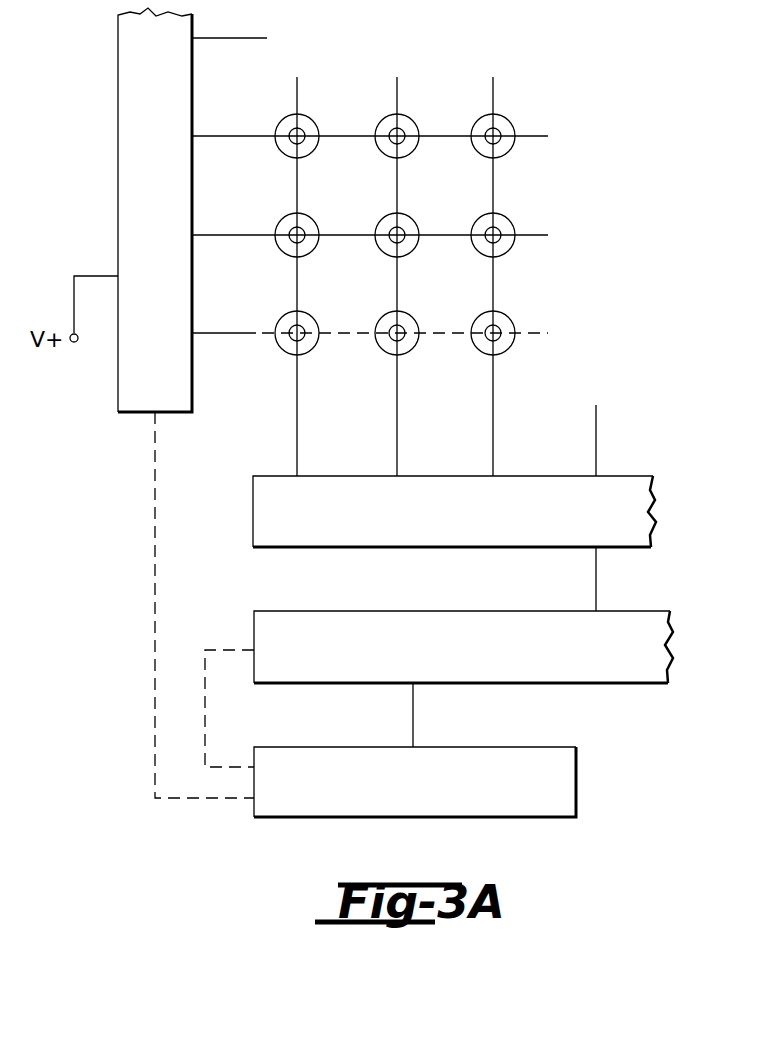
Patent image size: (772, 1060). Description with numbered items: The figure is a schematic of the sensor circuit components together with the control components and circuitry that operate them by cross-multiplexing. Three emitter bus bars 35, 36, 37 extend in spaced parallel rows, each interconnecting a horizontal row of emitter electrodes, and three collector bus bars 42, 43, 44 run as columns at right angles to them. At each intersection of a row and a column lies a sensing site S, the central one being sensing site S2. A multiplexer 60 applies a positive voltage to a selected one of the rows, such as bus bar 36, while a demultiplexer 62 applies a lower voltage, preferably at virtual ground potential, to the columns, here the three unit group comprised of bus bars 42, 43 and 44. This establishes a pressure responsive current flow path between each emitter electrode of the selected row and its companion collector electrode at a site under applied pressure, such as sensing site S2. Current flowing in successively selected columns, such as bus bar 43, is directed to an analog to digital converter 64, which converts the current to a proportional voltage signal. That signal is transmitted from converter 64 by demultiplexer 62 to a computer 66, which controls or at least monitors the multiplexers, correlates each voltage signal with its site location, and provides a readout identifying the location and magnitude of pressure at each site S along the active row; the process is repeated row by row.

The multiplexer 60 is at (132, 141).
The bus bar 35 is at (210, 134).
The bus bar 36 is at (208, 234).
The bus bar 37 is at (208, 332).
The collector bus bar 42 is at (493, 414).
The collector bus bar 43 is at (397, 414).
The collector bus bar 44 is at (297, 414).
The sensing site S is at (412, 213).
The sensing site S2 is at (416, 216).
The analog to digital converter 64 is at (634, 516).
The demultiplexer 62 is at (652, 640).
The computer 66 is at (556, 784).